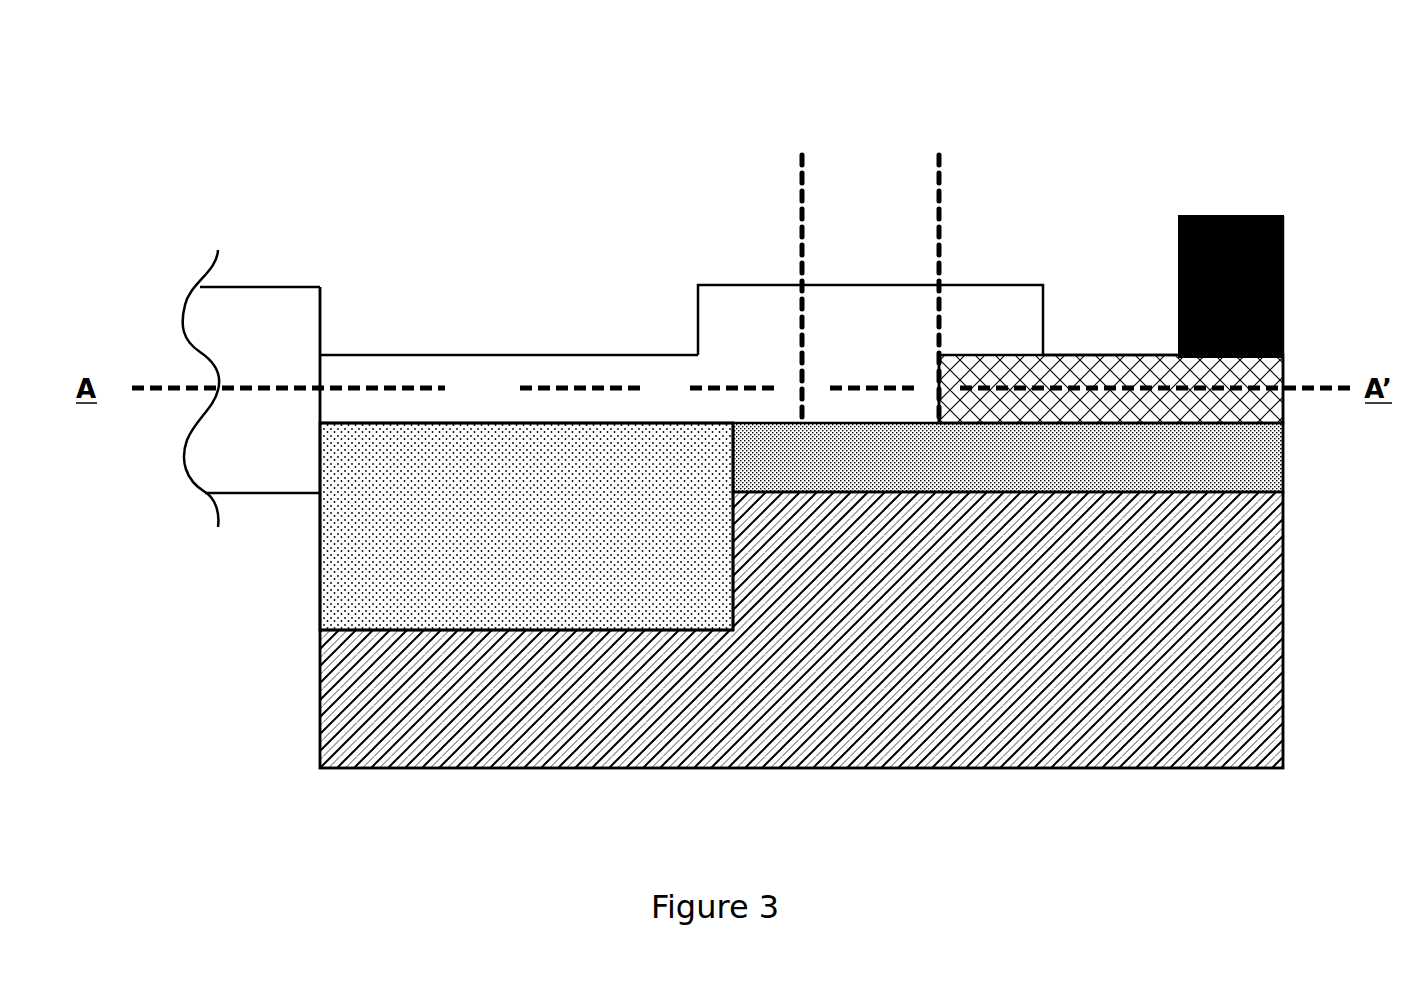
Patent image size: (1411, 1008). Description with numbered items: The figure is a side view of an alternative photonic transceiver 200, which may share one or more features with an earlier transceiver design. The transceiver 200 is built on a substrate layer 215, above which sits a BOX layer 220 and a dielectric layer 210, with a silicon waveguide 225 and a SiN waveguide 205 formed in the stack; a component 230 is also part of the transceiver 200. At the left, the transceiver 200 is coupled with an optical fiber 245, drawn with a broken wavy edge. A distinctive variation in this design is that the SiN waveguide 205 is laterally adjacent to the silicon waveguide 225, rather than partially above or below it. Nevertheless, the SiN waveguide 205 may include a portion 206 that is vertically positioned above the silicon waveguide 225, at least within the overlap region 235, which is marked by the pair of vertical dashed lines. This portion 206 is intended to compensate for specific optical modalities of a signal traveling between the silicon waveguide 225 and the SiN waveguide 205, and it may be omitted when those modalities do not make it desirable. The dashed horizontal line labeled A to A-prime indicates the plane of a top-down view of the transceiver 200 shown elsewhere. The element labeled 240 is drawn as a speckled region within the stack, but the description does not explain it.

The photonic transceiver 200 is at (388, 172).
The SiN waveguide 205 is at (668, 400).
The portion 206 is at (755, 320).
The dielectric layer 210 is at (355, 562).
The substrate layer 215 is at (1042, 733).
The BOX layer 220 is at (1248, 457).
The silicon waveguide 225 is at (1110, 390).
The component 230 is at (1237, 216).
The overlap region 235 is at (848, 113).
The doped well region 240 is at (462, 470).
The optical fiber 245 is at (252, 310).